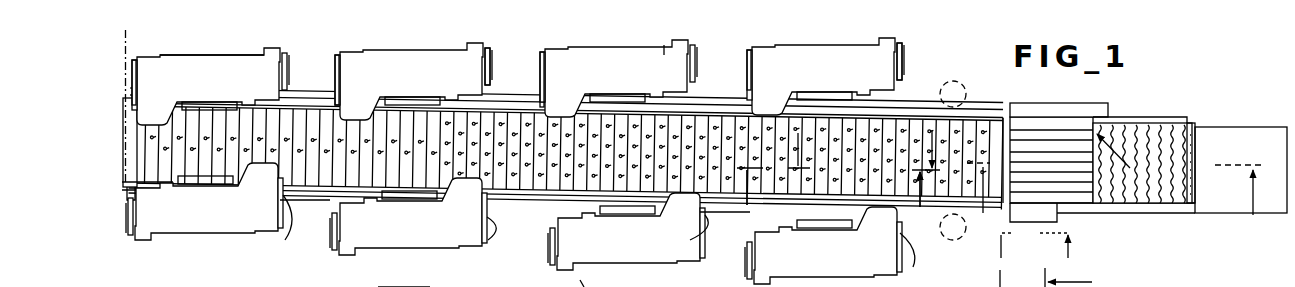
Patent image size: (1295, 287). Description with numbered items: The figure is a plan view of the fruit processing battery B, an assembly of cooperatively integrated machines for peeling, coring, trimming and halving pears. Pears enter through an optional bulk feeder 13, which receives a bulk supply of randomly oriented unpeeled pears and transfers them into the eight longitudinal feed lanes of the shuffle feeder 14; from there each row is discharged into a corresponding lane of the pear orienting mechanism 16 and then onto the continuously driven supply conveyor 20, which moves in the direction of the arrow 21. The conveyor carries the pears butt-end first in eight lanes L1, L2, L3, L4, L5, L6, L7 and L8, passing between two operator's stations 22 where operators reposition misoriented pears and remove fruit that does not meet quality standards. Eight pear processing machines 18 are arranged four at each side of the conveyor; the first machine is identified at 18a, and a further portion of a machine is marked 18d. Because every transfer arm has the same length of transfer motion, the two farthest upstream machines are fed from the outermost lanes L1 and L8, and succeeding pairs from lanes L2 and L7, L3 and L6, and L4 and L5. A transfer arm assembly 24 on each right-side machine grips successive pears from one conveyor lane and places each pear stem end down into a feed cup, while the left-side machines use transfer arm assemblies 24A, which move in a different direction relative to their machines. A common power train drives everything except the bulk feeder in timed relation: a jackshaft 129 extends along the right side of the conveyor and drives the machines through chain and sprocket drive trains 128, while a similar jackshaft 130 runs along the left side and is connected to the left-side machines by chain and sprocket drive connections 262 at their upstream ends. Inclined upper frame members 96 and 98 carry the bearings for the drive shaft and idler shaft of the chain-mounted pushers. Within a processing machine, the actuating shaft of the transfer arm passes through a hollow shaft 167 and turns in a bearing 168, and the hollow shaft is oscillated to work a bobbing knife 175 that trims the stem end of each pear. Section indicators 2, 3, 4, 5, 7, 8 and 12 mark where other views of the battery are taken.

The lane width dimension 2 is at (833, 187).
The height dimension arrow 3 is at (1116, 204).
The spacing dimension arrow 4 is at (1034, 247).
The leader line 5 is at (1100, 136).
The section line 7- 7 is at (122, 40).
The dimension 8 is at (1077, 277).
The channel width dimension 12 is at (864, 153).
The bulk feeder 13 is at (1281, 216).
The shuffle feeder 14 is at (1154, 121).
The pear orienting mechanism 16 is at (1084, 116).
The pear processing machine 18 is at (205, 88).
The first pear processing machine 18a is at (905, 62).
The clamp top plate 18d is at (224, 54).
The supply conveyor 20 is at (974, 114).
The arrow 21 is at (268, 120).
The operator's station 22 is at (975, 80).
The transfer arm assembly 24 is at (235, 106).
The transfer arm assembly 24A is at (221, 173).
The inclined upper frame member 96 is at (1031, 111).
The inclined upper frame member 98 is at (1098, 216).
The chain and sprocket drive train 128 is at (136, 65).
The jackshaft 129 is at (492, 89).
The jackshaft 130 is at (312, 207).
The hollow shaft 167 is at (607, 275).
The bearing 168 is at (436, 286).
The bobbing knife 175 is at (977, 278).
The chain and sprocket drive connection 262 is at (590, 241).
The fruit processing battery B is at (655, 41).
The lane L1 is at (1190, 135).
The lane L2 is at (1190, 145).
The lane L3 is at (1190, 153).
The lane L4 is at (1190, 162).
The lane L5 is at (1190, 170).
The lane L6 is at (1190, 178).
The lane L7 is at (1190, 186).
The lane L8 is at (1190, 194).